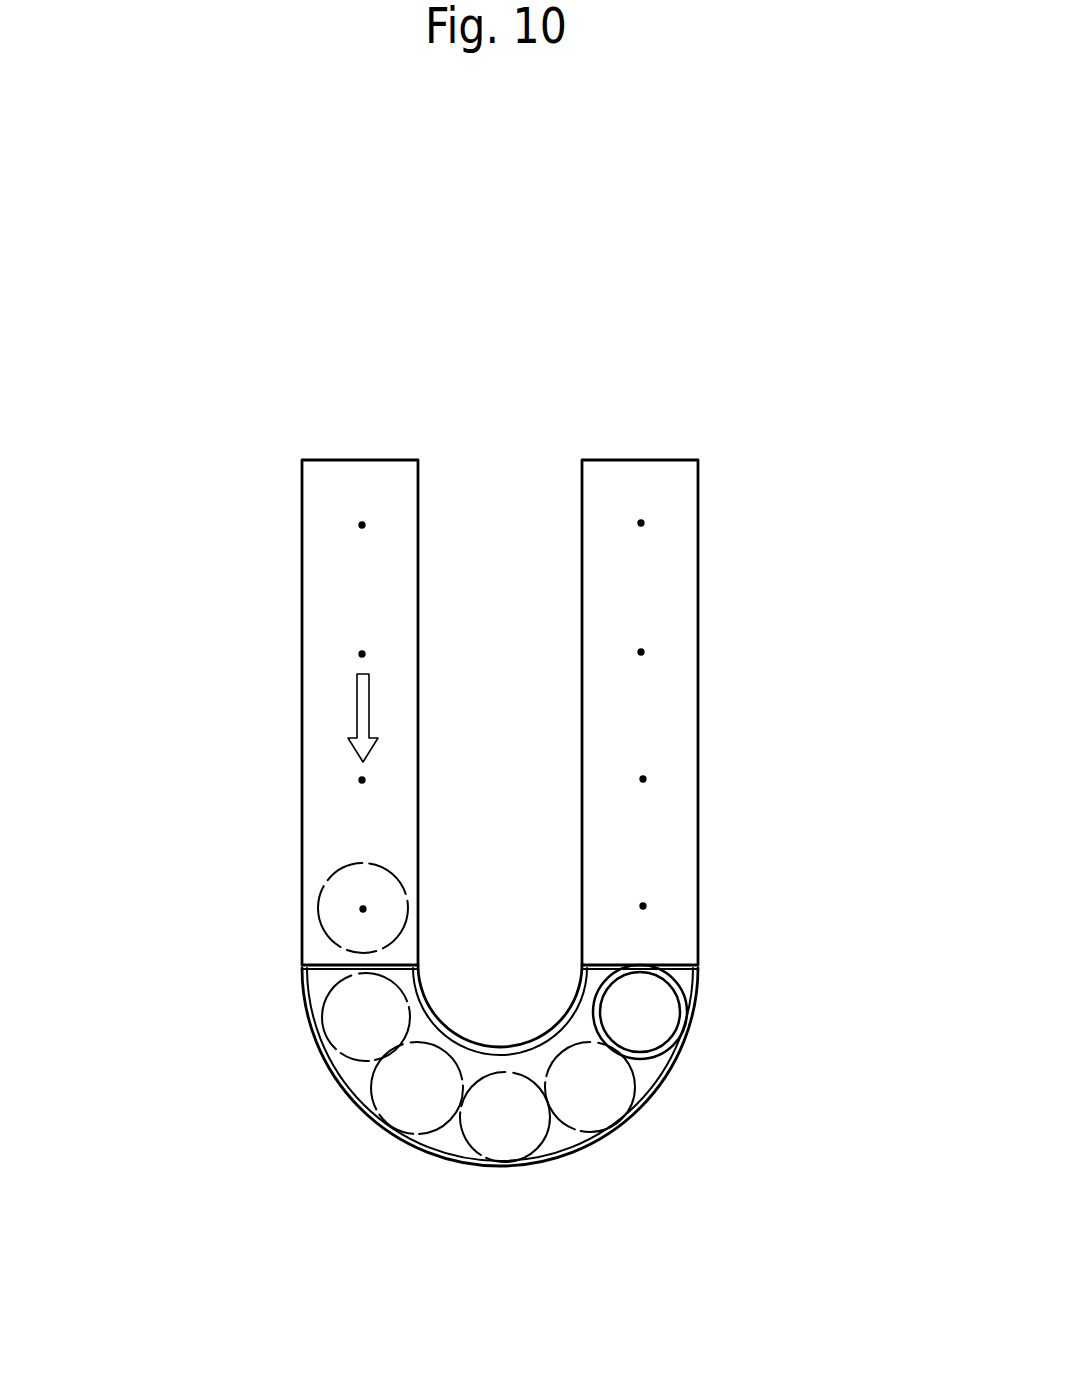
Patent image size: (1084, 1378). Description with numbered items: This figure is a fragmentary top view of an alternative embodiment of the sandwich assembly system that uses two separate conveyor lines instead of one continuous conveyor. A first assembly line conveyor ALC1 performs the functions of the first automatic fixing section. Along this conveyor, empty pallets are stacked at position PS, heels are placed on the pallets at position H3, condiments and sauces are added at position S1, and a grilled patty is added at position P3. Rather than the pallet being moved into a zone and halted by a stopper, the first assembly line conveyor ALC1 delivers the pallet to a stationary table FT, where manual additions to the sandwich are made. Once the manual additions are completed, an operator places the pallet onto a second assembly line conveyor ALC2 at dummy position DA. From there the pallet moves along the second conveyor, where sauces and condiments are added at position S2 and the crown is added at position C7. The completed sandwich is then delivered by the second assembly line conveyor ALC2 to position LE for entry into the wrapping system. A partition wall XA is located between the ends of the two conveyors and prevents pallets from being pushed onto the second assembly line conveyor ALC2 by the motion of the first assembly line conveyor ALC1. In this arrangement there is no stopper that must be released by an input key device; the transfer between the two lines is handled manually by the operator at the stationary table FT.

The first assembly line conveyor ALC1 is at (350, 460).
The second assembly line conveyor ALC2 is at (635, 460).
The pallet stack position PS is at (362, 525).
The heel position H3 is at (362, 654).
The first sauce and condiment position S1 is at (500, 780).
The patty position P3 is at (363, 909).
The wrapping entry position LE is at (641, 523).
The crown position C7 is at (641, 652).
The second sauce and condiment position S2 is at (500, 780).
The dummy position DA is at (643, 906).
The partition wall XA is at (700, 962).
The stationary table FT is at (568, 1157).